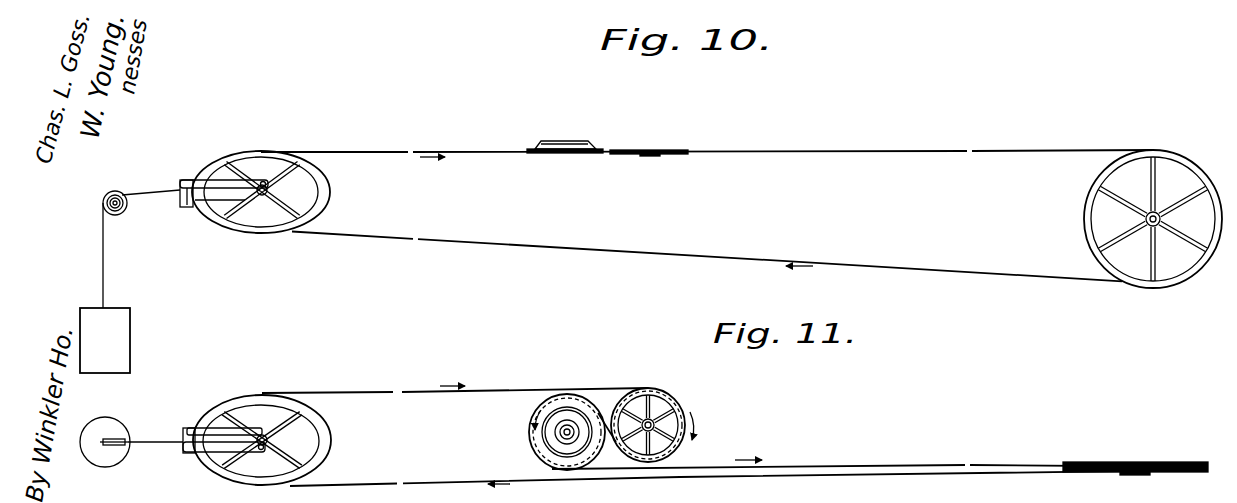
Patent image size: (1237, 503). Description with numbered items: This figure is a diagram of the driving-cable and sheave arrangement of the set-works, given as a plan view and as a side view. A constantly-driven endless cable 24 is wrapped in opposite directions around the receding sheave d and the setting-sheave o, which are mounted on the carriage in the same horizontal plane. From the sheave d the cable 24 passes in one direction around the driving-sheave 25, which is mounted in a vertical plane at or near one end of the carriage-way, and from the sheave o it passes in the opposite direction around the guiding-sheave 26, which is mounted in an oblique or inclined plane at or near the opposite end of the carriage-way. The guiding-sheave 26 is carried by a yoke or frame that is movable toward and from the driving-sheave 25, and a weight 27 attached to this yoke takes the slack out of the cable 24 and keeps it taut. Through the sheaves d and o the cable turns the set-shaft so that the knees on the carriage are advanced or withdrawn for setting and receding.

In FIG. 10, the endless cable 24 is at (585, 249).
In FIG. 11, the endless cable 24 is at (513, 392).
In FIG. 10, the driving-sheave 25 is at (1115, 189).
In FIG. 11, the driving-sheave 25 is at (1132, 455).
In FIG. 10, the guiding-sheave 26 is at (268, 152).
In FIG. 11, the guiding-sheave 26 is at (333, 446).
In FIG. 10, the weight 27 is at (130, 281).
In FIG. 11, the weight 27 is at (114, 419).
In FIG. 10, the receding sheave d is at (551, 140).
In FIG. 11, the receding sheave d is at (526, 431).
In FIG. 10, the setting-sheave o is at (630, 148).
In FIG. 11, the setting-sheave o is at (670, 406).